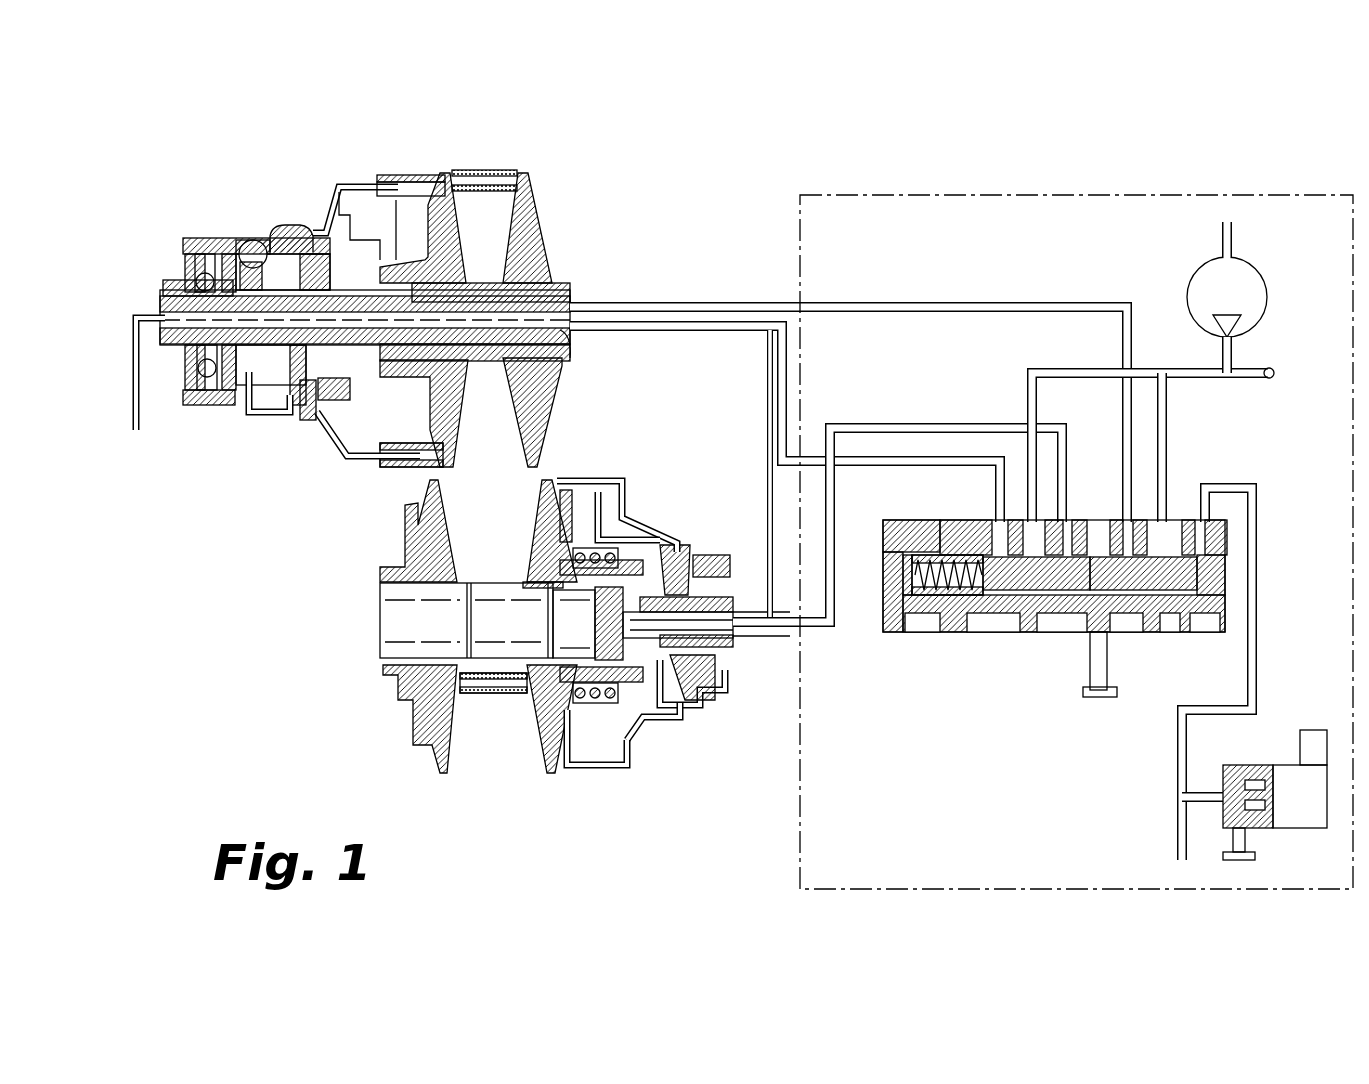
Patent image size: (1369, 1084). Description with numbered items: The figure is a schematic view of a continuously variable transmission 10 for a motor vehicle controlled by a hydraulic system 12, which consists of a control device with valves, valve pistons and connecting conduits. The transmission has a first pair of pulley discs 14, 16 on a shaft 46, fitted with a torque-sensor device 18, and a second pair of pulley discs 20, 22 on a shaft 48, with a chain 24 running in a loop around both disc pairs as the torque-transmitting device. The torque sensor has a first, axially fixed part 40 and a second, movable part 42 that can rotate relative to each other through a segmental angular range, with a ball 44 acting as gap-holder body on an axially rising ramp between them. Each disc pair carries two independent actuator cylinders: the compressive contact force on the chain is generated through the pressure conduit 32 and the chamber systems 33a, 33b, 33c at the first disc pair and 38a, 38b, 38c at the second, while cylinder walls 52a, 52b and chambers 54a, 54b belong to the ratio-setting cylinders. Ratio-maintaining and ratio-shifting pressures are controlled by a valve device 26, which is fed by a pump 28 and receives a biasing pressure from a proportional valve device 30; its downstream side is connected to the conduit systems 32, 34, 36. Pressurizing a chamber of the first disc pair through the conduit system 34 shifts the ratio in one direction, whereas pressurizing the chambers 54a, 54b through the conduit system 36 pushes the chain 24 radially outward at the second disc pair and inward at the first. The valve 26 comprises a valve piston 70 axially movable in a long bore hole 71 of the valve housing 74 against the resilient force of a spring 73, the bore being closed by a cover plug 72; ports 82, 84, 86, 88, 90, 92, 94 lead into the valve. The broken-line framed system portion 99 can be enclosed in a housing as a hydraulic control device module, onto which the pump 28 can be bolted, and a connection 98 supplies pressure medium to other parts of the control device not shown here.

The continuously variable transmission 10 is at (560, 245).
The hydraulic system 12 is at (888, 270).
The pulley disc 14 is at (443, 172).
The pulley disc 16 is at (528, 208).
The torque-sensor device 18 is at (260, 242).
The pulley disc 20 is at (424, 740).
The pulley disc 22 is at (545, 740).
The chain 24 is at (488, 170).
The valve device 26 is at (1013, 640).
The pump 28 is at (1248, 272).
The proportional valve device 30 is at (1243, 765).
The pressure conduit 32 is at (768, 388).
The chamber 33a is at (196, 280).
The chamber 33b is at (284, 398).
The chamber 33c is at (322, 428).
The hydraulic conduit system 34 is at (942, 303).
The hydraulic conduit system 36 is at (962, 424).
The chamber 38a is at (688, 716).
The chamber 38b is at (655, 722).
The chamber 38c is at (625, 762).
The axially fixed part 40 is at (252, 262).
The movable part 42 is at (282, 235).
The ball 44 is at (247, 240).
The shaft 46 is at (550, 292).
The shaft 48 is at (395, 690).
The cylinder wall 52a is at (340, 185).
The cylinder wall 52b is at (365, 200).
The chamber 54a is at (686, 550).
The chamber 54b is at (625, 535).
The valve piston 70 is at (1172, 632).
The long bore hole 71 is at (1130, 632).
The cover plug 72 is at (906, 632).
The spring 73 is at (958, 632).
The valve housing 74 is at (1212, 632).
The valve port 82 is at (1200, 532).
The valve port 84 is at (1170, 520).
The valve port 86 is at (1135, 520).
The valve port 88 is at (1108, 520).
The valve port 90 is at (1068, 520).
The valve port 92 is at (1020, 520).
The valve port 94 is at (985, 520).
The connection 98 is at (1265, 378).
The system portion 99 is at (1098, 196).